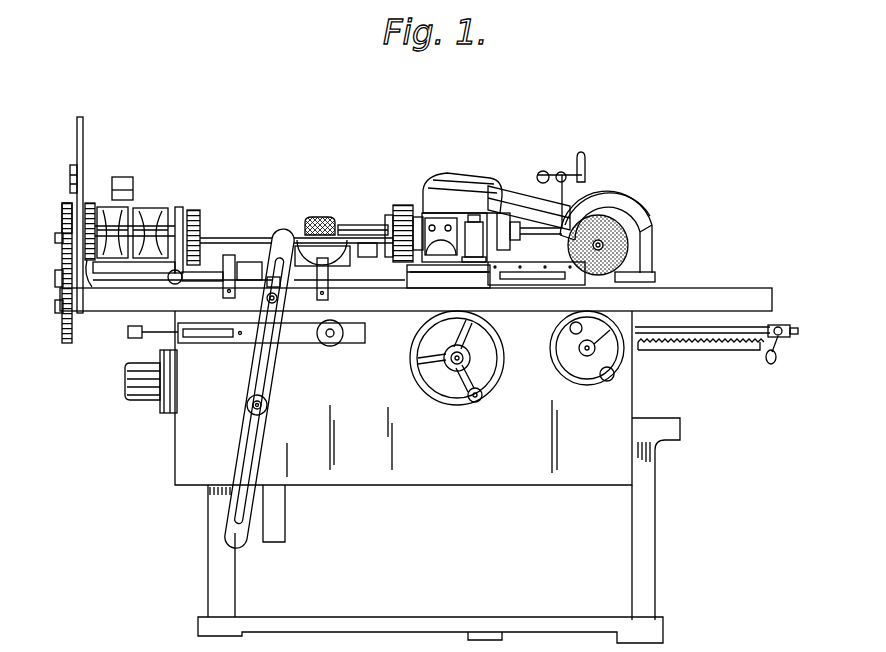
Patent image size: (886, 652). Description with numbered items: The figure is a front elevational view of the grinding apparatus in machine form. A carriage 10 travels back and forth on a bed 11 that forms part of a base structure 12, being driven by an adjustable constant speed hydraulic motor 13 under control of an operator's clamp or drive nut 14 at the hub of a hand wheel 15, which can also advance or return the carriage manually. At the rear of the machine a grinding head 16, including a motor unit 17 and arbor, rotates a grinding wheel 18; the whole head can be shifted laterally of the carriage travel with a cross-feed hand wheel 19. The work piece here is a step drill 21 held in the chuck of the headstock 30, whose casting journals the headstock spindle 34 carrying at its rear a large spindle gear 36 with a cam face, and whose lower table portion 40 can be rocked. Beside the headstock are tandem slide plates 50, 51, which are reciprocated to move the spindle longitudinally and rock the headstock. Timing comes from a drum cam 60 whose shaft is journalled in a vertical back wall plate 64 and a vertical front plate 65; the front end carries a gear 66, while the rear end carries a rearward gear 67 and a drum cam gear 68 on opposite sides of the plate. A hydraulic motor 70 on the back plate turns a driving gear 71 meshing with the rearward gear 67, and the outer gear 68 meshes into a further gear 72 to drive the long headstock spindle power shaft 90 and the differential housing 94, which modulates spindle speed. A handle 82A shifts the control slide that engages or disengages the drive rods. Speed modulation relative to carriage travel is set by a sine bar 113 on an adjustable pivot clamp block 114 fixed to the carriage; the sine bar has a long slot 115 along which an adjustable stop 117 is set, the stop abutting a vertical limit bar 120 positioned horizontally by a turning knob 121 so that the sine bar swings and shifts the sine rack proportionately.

The carriage 10 is at (695, 300).
The bed 11 is at (645, 397).
The base structure 12 is at (648, 496).
The adjustable constant speed hydraulic motor 13 is at (125, 378).
The operator's clamp or drive nut 14 is at (462, 365).
The hand wheel 15 is at (480, 350).
The grinding head 16 is at (615, 187).
The motor unit 17 is at (460, 190).
The grinding wheel 18 is at (620, 245).
The cross-feed hand wheel 19 is at (578, 350).
The step drill 21 is at (528, 232).
The headstock 30 is at (435, 215).
The headstock spindle 34 is at (360, 226).
The spindle gear 36 is at (396, 207).
The table portion 40 is at (505, 272).
The first slide plate 50 is at (380, 272).
The second slide plate 51 is at (456, 272).
The drum cam 60 is at (145, 210).
The vertical back wall plate 64 is at (77, 128).
The vertical front plate 65 is at (182, 208).
The gear 66 is at (200, 218).
The rearward gear 67 is at (92, 200).
The drum cam gear 68 is at (62, 228).
The hydraulic motor 70 is at (137, 188).
The driving gear 71 is at (105, 284).
The gear 72 is at (59, 255).
The handle 82A is at (183, 289).
The headstock spindle power shaft 90 is at (242, 229).
The differential housing 94 is at (309, 218).
The sine bar 113 is at (283, 232).
The adjustable pivot clamp block 114 is at (299, 282).
The slot 115 is at (253, 437).
The adjustable stop 117 is at (247, 405).
The vertical limit bar 120 is at (280, 390).
The turning knob 121 is at (330, 346).